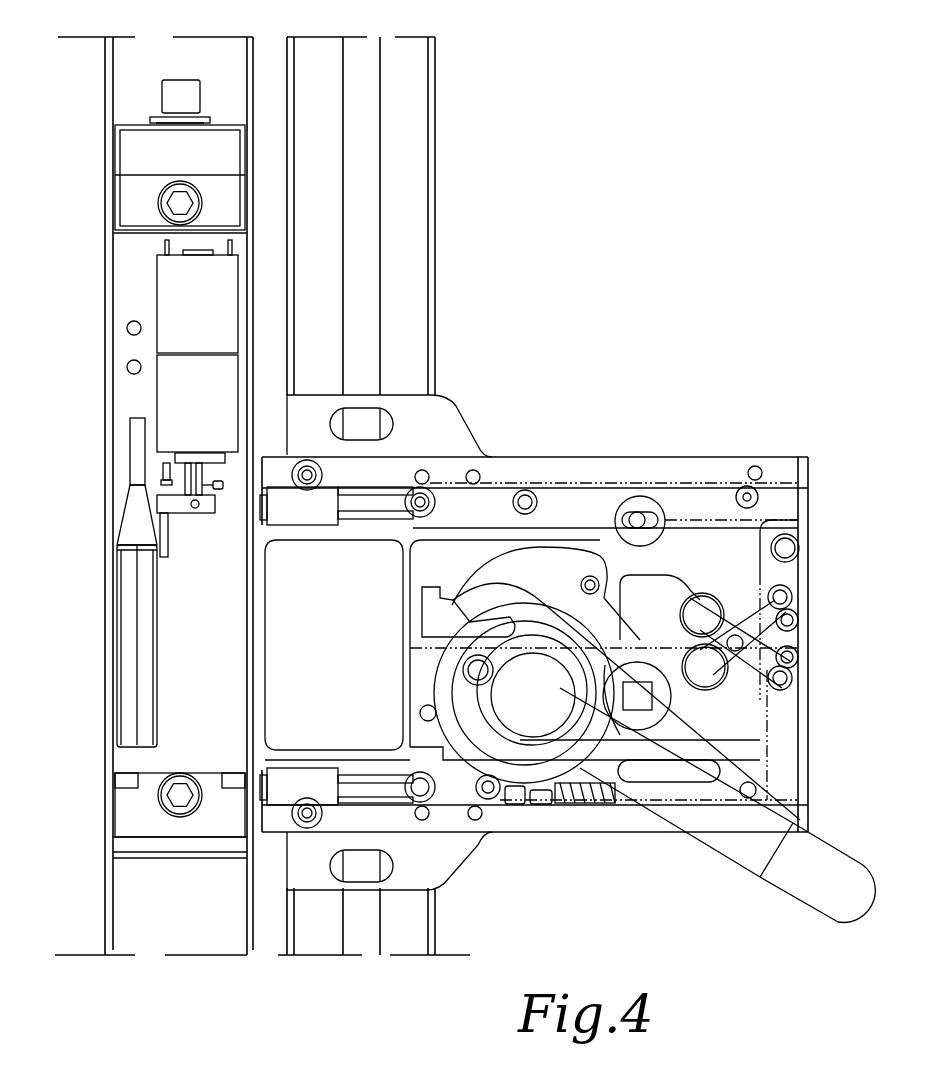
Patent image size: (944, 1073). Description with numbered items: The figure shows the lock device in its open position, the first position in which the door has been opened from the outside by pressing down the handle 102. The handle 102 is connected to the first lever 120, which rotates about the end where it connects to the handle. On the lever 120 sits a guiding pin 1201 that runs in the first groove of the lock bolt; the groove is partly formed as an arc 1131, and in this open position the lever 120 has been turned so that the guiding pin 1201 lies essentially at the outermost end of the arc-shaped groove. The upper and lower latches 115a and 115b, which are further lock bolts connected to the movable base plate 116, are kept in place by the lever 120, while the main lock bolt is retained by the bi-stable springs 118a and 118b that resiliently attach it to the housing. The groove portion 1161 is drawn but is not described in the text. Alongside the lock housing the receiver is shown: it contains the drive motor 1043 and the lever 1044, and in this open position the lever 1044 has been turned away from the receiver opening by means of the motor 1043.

The drive motor 1043 is at (180, 298).
The lever 1044 is at (180, 505).
The upper latch 115a is at (372, 765).
The lower latch 115b is at (368, 502).
The cam lever 1161 is at (400, 606).
The arc 1131 is at (553, 563).
The guiding pin 1201 is at (548, 603).
The first lever 120 is at (577, 607).
The movable base plate 116 is at (795, 497).
The bi-stable spring 118a is at (780, 597).
The bi-stable spring 118b is at (780, 672).
The handle 102 is at (723, 828).